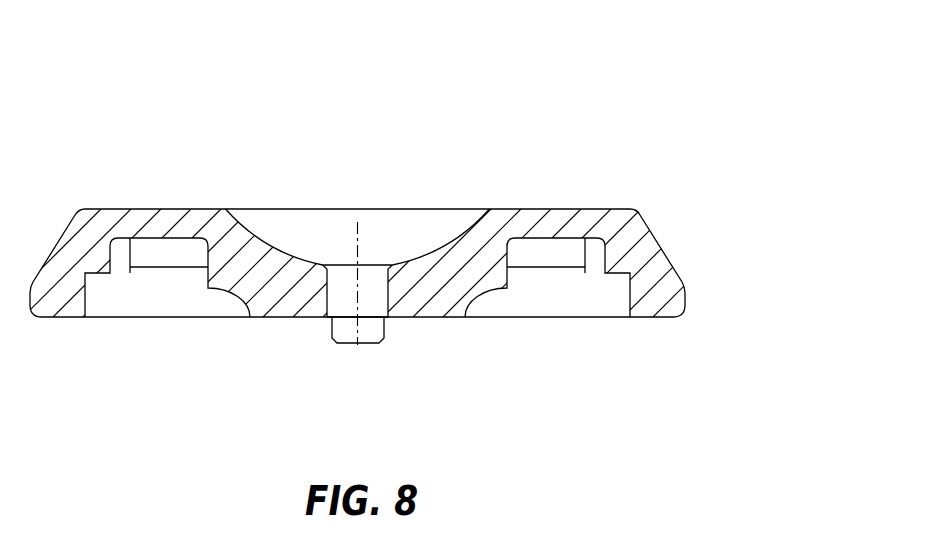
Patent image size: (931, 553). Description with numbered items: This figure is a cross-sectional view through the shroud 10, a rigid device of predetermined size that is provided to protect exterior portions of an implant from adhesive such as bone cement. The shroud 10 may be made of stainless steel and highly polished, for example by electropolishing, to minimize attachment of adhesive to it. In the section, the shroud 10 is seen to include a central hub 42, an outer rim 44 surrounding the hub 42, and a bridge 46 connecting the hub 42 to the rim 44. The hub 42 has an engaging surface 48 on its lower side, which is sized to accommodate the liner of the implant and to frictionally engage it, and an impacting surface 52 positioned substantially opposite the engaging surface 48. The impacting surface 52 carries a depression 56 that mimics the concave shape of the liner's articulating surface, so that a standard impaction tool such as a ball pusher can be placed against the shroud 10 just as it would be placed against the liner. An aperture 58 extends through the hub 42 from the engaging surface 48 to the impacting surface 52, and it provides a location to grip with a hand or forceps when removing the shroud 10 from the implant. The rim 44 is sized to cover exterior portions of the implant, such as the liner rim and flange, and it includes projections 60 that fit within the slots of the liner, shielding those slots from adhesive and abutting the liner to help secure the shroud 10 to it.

The shroud 10 is at (553, 74).
The hub 42 is at (470, 318).
The rim 44 is at (55, 290).
The bridge 46 is at (155, 217).
The engaging surface 48 is at (250, 320).
The impacting surface 52 is at (253, 232).
The depression 56 is at (444, 221).
The aperture 58 is at (373, 292).
The projections 60 is at (368, 330).